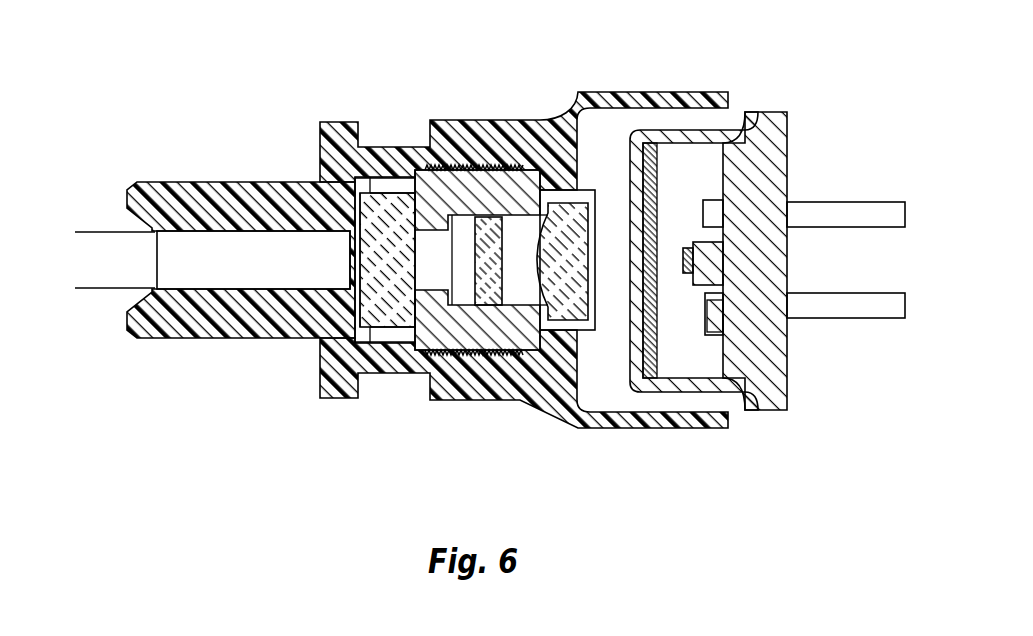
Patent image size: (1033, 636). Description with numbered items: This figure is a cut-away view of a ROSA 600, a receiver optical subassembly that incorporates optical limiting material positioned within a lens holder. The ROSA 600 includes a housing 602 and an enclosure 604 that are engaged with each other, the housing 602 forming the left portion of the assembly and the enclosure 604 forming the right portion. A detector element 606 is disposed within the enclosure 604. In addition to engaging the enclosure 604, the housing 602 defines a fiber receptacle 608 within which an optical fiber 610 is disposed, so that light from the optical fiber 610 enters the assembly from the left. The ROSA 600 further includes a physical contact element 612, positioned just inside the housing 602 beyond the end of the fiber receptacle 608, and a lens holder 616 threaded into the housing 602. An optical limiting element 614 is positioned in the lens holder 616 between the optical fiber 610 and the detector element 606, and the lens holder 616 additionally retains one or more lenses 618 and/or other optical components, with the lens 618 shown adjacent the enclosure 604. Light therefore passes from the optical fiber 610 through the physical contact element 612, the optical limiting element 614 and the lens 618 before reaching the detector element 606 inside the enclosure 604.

The ROSA 600 is at (182, 68).
The housing 602 is at (339, 120).
The enclosure 604 is at (742, 130).
The detector element 606 is at (686, 262).
The fiber receptacle 608 is at (263, 292).
The optical fiber 610 is at (212, 291).
The physical contact element 612 is at (400, 345).
The optical limiting element 614 is at (490, 216).
The lens holder 616 is at (517, 356).
The lens 618 is at (563, 280).